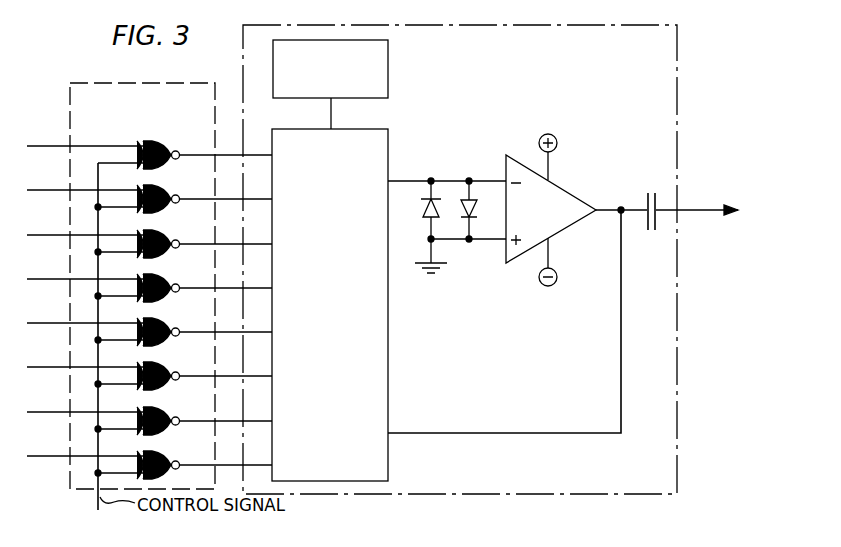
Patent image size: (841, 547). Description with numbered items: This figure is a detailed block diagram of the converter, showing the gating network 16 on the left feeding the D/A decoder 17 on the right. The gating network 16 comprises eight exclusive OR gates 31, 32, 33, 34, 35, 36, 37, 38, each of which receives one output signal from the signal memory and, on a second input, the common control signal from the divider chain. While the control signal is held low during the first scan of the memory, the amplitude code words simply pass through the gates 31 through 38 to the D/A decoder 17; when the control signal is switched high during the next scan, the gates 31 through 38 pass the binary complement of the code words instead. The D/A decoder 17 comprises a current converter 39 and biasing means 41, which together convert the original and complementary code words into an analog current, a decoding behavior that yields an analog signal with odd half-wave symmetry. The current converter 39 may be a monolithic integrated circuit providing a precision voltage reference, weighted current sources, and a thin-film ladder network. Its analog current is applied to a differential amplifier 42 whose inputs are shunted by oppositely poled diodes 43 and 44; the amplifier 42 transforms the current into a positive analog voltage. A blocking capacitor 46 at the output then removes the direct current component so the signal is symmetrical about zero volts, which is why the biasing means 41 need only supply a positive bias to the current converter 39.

The gating network 16 is at (173, 83).
The D/A decoder 17 is at (637, 494).
The exclusive OR gate 31 is at (167, 145).
The exclusive OR gate 32 is at (167, 189).
The exclusive OR gate 33 is at (167, 234).
The exclusive OR gate 34 is at (167, 278).
The exclusive OR gate 35 is at (167, 322).
The exclusive OR gate 36 is at (167, 366).
The exclusive OR gate 37 is at (167, 411).
The exclusive OR gate 38 is at (167, 455).
The current converter 39 is at (388, 146).
The biasing means 41 is at (388, 63).
The differential amplifier 42 is at (576, 198).
The diode 43 is at (421, 206).
The diode 44 is at (477, 212).
The blocking capacitor 46 is at (645, 224).